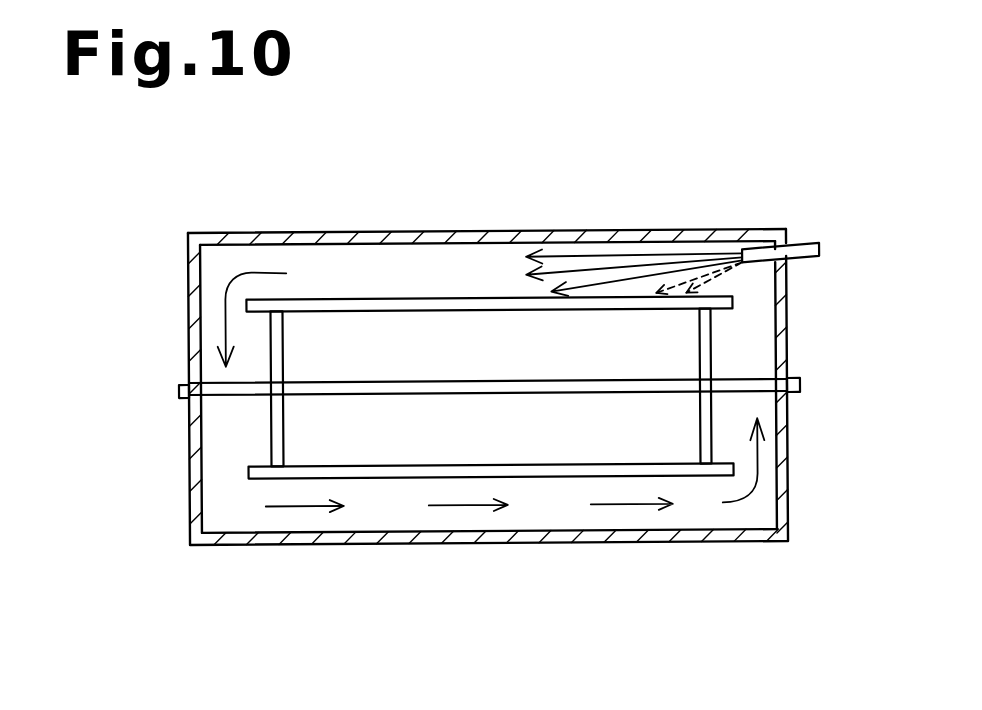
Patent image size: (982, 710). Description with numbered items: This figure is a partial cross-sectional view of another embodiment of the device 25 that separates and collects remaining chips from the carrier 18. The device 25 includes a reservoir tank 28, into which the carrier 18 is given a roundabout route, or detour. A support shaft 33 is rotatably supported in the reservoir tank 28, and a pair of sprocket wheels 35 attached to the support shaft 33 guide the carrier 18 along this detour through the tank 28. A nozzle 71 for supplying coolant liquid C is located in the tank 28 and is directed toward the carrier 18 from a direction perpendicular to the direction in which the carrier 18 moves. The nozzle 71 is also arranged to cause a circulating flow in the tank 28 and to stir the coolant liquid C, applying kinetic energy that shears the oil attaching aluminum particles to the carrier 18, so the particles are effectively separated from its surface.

The device 25 is at (360, 214).
The reservoir tank 28 is at (447, 231).
The carrier 18 is at (387, 477).
The support shaft 33 is at (232, 393).
The sprocket wheels 35 is at (270, 333).
The coolant liquid C is at (240, 504).
The nozzle 71 is at (795, 245).